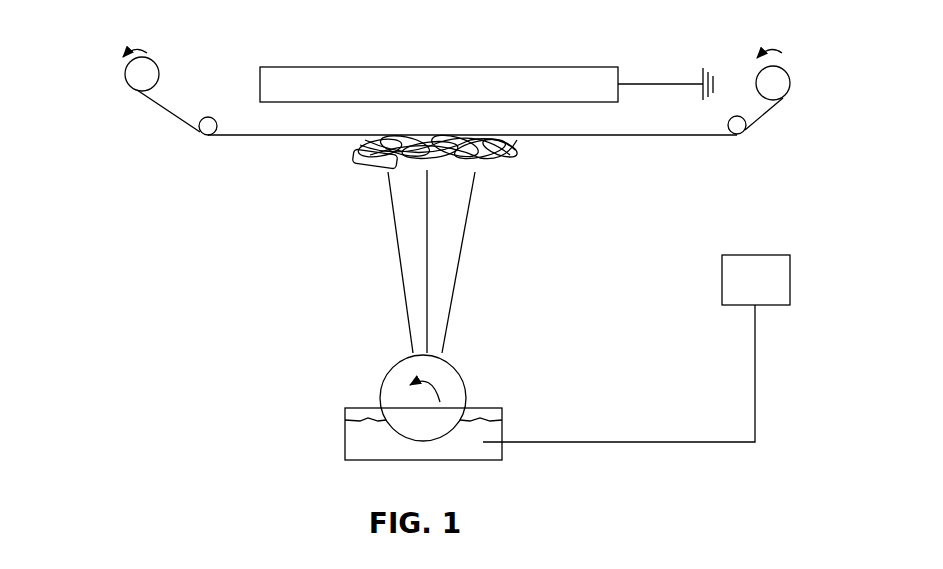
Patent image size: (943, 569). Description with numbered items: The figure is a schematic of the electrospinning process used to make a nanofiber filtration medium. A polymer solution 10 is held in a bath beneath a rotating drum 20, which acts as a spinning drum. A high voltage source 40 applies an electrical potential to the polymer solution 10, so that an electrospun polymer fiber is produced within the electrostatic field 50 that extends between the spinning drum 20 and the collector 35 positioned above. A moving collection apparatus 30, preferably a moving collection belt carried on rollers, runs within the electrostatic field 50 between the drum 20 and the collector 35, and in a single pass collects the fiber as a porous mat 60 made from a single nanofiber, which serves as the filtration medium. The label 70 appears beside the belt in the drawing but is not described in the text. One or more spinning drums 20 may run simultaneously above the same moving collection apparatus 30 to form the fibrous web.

The polymer solution 10 is at (363, 442).
The rotating drum 20 is at (380, 392).
The moving collection apparatus 30 is at (277, 137).
The collector 35 is at (242, 67).
The high voltage source 40 is at (720, 278).
The electrostatic field 50 is at (387, 250).
The porous mat 60 is at (507, 153).
The belt travel direction 70 is at (831, 139).